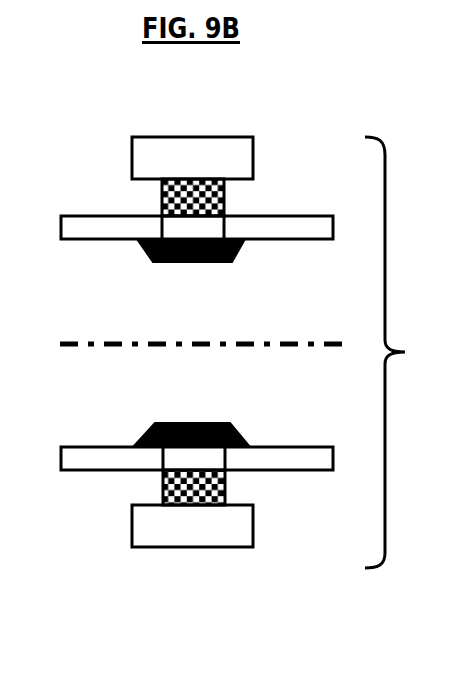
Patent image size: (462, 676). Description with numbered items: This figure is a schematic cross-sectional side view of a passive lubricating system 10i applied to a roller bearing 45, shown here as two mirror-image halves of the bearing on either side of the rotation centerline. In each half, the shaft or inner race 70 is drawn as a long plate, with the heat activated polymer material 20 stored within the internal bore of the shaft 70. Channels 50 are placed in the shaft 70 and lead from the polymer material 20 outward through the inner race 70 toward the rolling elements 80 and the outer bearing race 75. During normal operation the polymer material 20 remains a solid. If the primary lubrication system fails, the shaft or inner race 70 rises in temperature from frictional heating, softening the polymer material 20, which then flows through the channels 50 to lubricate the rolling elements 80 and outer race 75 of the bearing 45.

The lubricating system 10i is at (38, 131).
The heat activated polymer material 20 is at (218, 260).
The bearing 45 is at (401, 352).
The channels 50 is at (157, 230).
The shaft or inner race 70 is at (70, 228).
The outer bearing race 75 is at (134, 152).
The rolling elements 80 is at (237, 192).